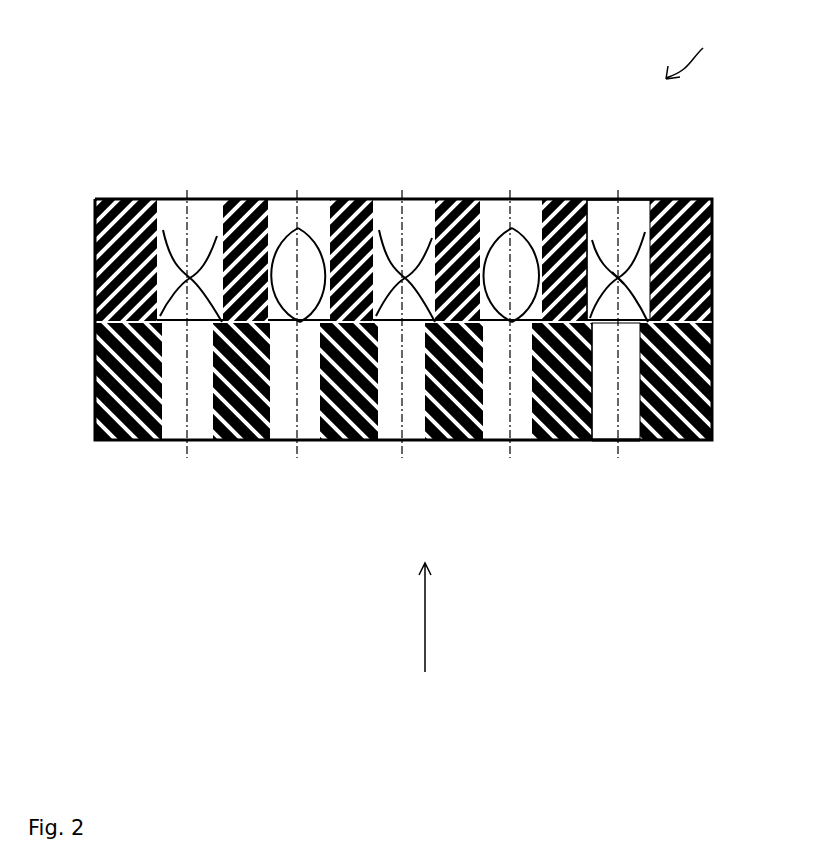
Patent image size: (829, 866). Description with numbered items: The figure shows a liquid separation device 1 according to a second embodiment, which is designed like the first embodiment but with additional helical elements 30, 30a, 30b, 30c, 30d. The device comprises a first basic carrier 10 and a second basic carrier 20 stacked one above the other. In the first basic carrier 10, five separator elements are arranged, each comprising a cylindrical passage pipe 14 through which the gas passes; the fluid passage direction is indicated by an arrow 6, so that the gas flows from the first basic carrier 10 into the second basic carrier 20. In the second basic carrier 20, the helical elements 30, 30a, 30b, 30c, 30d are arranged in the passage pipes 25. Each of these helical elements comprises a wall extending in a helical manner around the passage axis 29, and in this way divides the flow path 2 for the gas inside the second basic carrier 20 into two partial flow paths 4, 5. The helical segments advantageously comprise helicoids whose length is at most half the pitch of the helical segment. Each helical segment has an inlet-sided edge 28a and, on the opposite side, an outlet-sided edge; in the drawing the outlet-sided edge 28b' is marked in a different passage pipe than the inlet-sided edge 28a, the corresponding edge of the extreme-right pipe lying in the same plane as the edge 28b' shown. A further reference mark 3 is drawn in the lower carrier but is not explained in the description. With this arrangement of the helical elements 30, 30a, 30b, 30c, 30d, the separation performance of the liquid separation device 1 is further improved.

The liquid separator element 1 is at (690, 51).
The flow path 2 is at (633, 210).
The opening 3 is at (598, 381).
The partial flow path 4 is at (610, 314).
The partial flow path 5 is at (638, 242).
The arrow 6 is at (425, 627).
The first basic carrier 10 is at (706, 393).
The passage pipe 14 is at (600, 442).
The second basic carrier 20 is at (714, 244).
The passage pipe 25 is at (590, 200).
The inlet-sided edge 28a is at (616, 381).
The outlet-sided edge 28b' is at (302, 181).
The passage axis 29 is at (612, 258).
The helical element 30 is at (619, 265).
The helical element 30a is at (190, 265).
The helical element 30b is at (297, 265).
The helical element 30c is at (405, 265).
The helical element 30d is at (511, 264).